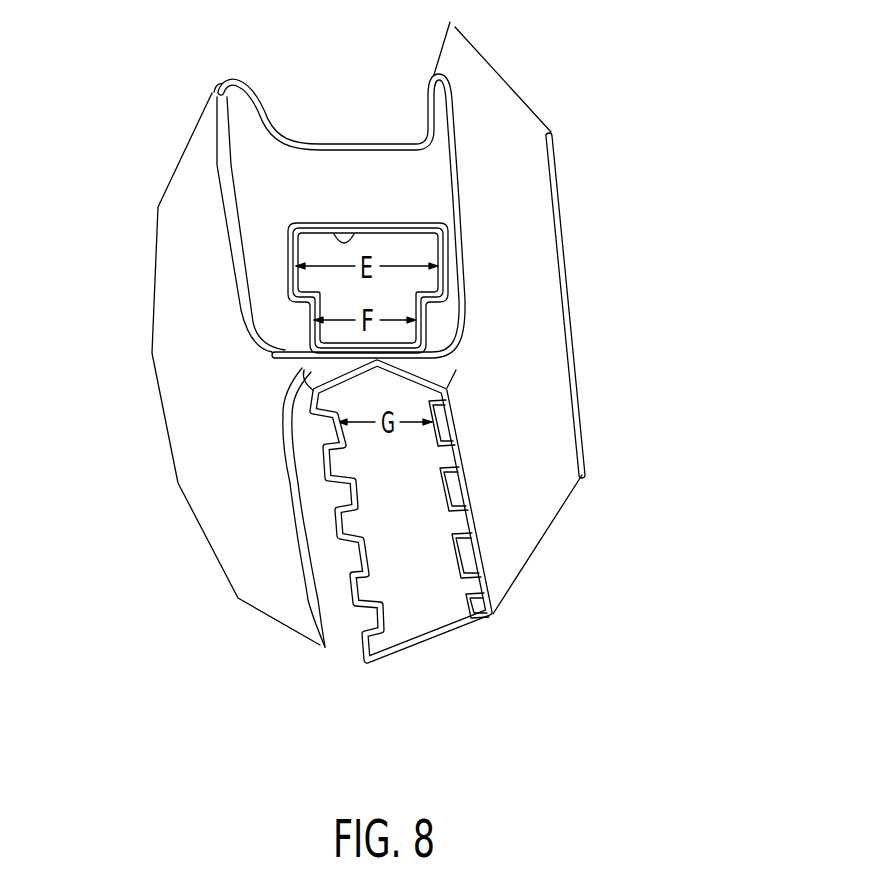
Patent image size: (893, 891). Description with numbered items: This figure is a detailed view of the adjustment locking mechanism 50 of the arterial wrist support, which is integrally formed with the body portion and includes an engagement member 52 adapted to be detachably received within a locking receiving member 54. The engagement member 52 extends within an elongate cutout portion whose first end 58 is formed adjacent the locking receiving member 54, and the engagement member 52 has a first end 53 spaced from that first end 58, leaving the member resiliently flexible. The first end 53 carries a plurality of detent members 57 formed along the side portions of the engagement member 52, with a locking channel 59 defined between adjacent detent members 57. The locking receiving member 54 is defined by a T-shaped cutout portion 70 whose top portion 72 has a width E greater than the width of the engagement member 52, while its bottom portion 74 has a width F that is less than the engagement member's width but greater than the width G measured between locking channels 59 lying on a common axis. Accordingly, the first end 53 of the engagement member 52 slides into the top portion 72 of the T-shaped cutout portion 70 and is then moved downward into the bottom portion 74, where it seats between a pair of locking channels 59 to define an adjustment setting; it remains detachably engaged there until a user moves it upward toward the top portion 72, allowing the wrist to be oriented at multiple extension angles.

The adjustment locking mechanism 50 is at (480, 247).
The engagement member 52 is at (434, 508).
The first end 53 is at (449, 415).
The locking receiving member 54 is at (433, 222).
The detent member 57 is at (445, 392).
The first end 58 is at (290, 412).
The locking channel 59 is at (467, 487).
The T-shaped cutout portion 70 is at (350, 240).
The top portion 72 is at (307, 232).
The bottom portion 74 is at (315, 321).